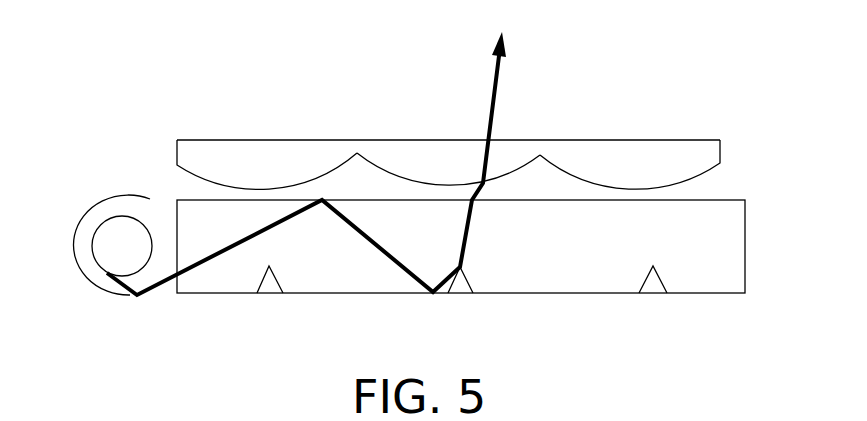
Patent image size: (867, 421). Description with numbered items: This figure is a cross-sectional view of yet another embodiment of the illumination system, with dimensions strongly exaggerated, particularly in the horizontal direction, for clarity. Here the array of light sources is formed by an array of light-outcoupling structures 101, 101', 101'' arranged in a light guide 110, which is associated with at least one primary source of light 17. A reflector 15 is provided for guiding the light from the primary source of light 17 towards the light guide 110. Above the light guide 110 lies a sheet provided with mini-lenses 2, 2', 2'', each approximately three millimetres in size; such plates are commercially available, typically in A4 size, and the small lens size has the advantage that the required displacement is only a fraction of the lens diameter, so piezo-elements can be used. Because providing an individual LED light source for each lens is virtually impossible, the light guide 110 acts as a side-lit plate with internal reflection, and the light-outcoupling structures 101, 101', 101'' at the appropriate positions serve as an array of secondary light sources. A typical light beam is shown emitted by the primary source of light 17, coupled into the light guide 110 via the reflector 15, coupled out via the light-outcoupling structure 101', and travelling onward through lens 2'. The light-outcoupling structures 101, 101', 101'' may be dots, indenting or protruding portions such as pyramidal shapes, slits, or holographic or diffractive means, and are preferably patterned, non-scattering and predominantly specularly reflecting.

The mini-lens 2 is at (267, 129).
The mini-lens 2' is at (448, 137).
The mini-lens 2'' is at (630, 139).
The primary source of light 17 is at (117, 228).
The reflector 15 is at (102, 302).
The light guide 110 is at (713, 212).
The light-outcoupling structure 101 is at (269, 307).
The light-outcoupling structure 101' is at (462, 307).
The light-outcoupling structure 101'' is at (653, 306).